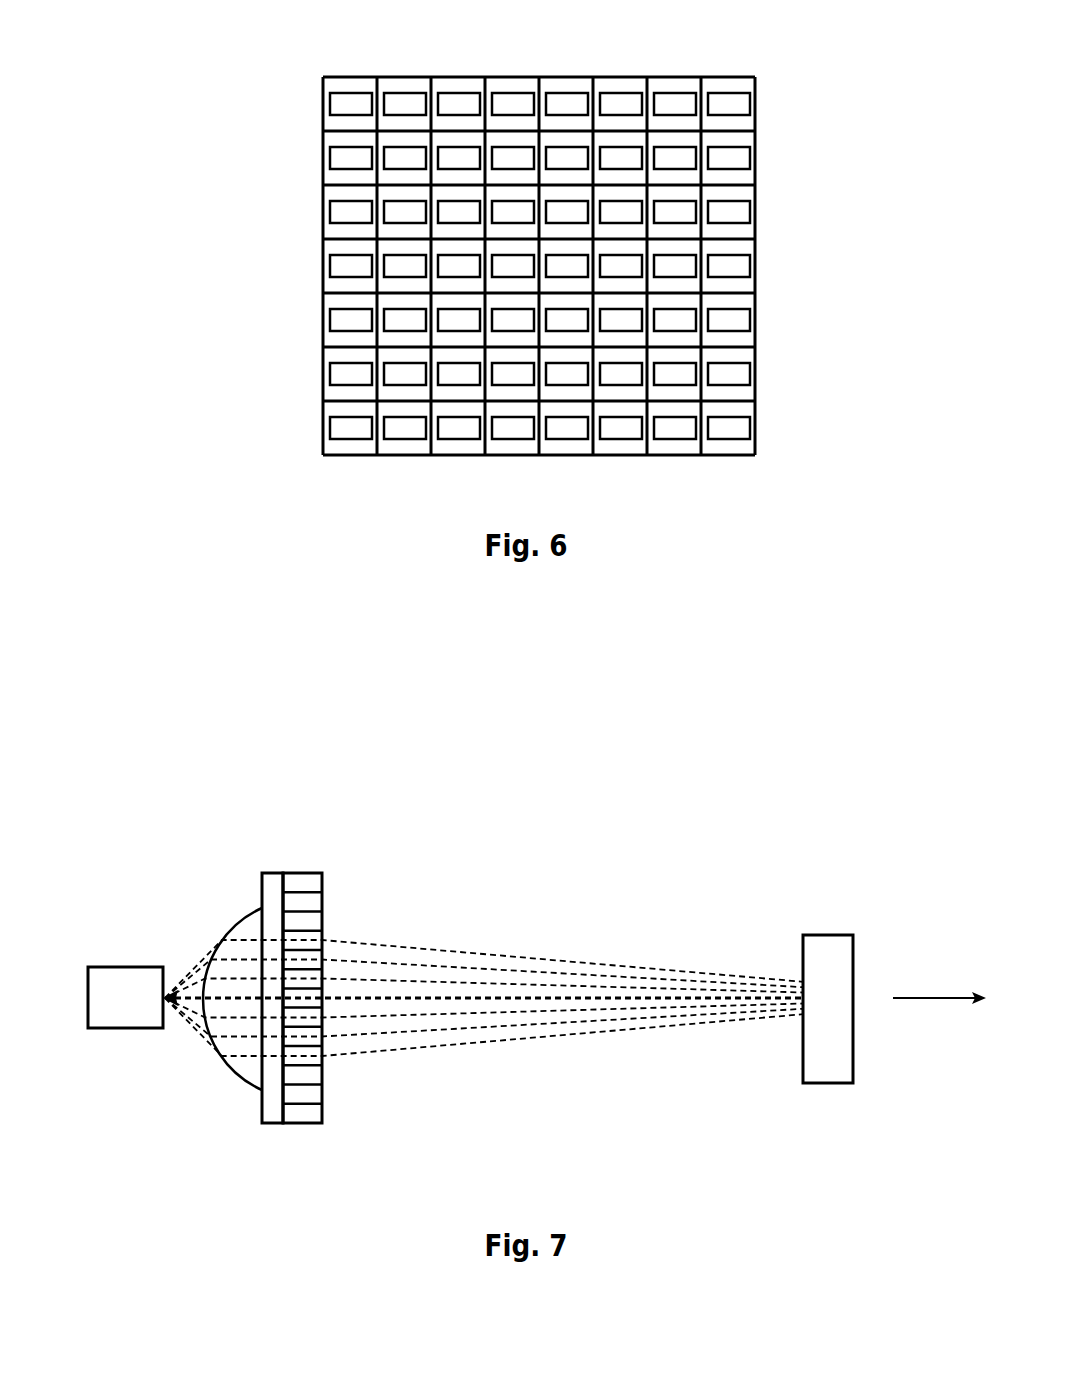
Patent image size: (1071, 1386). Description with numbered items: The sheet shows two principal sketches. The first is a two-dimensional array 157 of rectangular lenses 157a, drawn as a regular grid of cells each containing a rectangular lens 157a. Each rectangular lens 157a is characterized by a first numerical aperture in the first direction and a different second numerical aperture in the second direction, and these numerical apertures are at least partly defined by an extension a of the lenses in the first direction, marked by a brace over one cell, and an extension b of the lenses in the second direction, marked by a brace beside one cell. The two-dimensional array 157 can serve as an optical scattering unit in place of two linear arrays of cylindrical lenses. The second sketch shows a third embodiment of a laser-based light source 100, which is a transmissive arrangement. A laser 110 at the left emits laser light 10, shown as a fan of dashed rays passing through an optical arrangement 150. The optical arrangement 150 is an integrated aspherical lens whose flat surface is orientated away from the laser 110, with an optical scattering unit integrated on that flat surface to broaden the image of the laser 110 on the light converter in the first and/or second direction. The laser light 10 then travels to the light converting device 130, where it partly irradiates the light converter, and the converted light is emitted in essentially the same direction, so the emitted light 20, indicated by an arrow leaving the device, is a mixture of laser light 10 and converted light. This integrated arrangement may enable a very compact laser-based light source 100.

In FIG. 6, the two-dimensional array 157 is at (322, 108).
In FIG. 6, the rectangular lens 157a is at (617, 84).
In FIG. 6, the extension of the lenses in the first direction a is at (372, 58).
In FIG. 6, the extension of the lenses in the second direction b is at (767, 93).
In FIG. 7, the laser-based light source 100 is at (115, 728).
In FIG. 7, the laser 110 is at (125, 1018).
In FIG. 7, the optical arrangement 150 is at (340, 843).
In FIG. 7, the laser light 10 is at (554, 1036).
In FIG. 7, the light converting device 130 is at (843, 1085).
In FIG. 7, the emitted light 20 is at (937, 998).